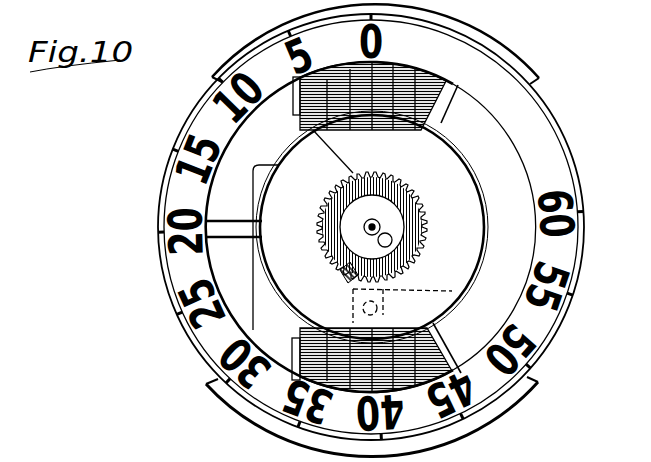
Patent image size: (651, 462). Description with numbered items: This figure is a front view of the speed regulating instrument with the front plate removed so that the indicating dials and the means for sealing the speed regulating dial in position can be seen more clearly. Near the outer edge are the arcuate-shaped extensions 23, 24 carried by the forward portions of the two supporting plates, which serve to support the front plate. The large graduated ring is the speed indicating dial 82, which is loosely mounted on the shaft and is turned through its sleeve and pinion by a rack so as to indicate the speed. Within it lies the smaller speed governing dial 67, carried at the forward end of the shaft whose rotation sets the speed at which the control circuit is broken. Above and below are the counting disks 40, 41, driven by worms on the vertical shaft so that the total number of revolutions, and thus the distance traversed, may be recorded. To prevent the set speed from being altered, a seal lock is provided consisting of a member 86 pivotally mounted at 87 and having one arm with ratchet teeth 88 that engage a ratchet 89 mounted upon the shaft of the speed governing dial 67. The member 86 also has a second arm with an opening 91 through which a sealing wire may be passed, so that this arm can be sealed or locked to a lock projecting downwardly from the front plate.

The arcuate-shaped extension 23 is at (222, 397).
The arcuate-shaped extension 24 is at (232, 56).
The counting disk 40 is at (430, 362).
The counting disk 41 is at (441, 123).
The speed governing dial 67 is at (287, 249).
The speed indicating dial 82 is at (176, 188).
The seal lock member 86 is at (343, 273).
The pivot 87 is at (355, 282).
The ratchet teeth 88 is at (447, 294).
The ratchet 89 is at (415, 192).
The opening 91 is at (302, 329).